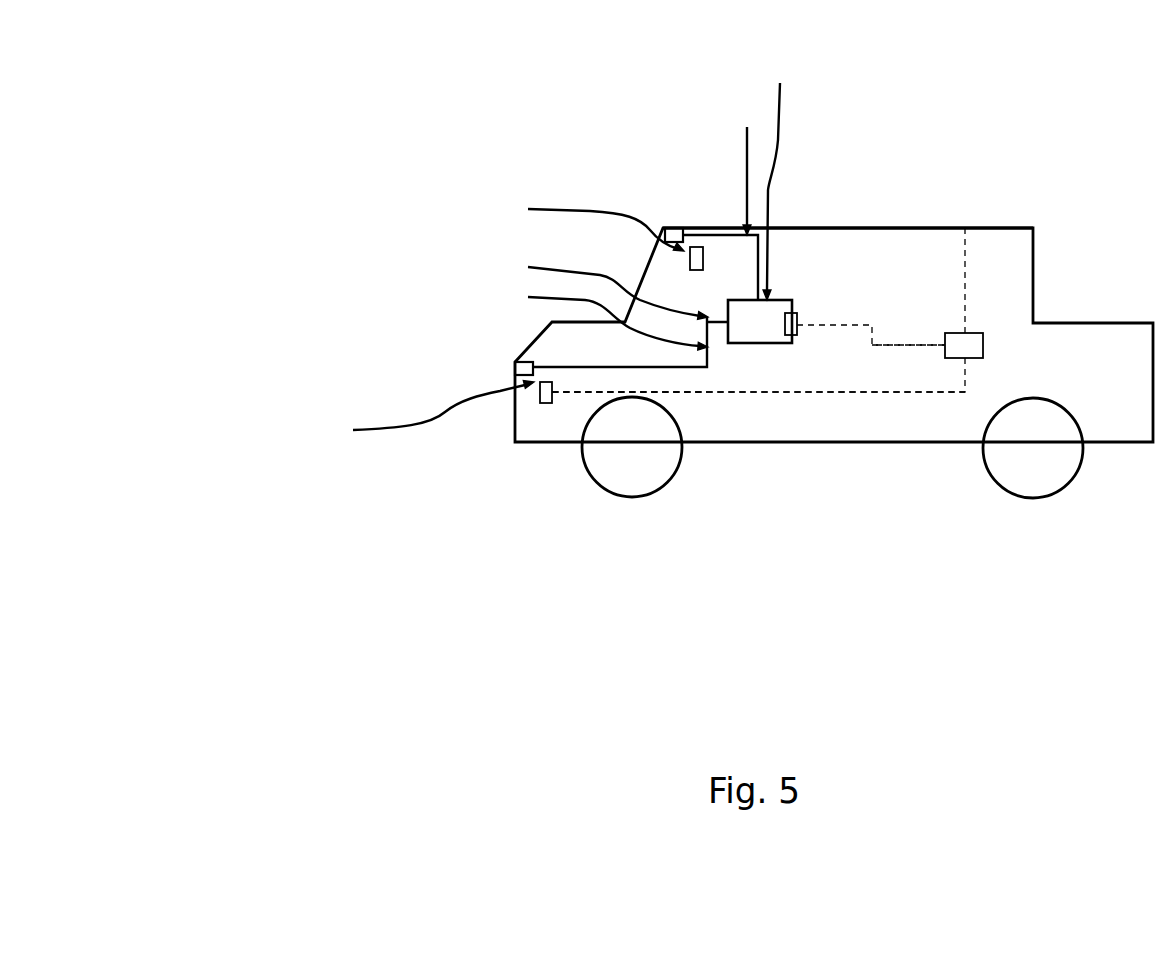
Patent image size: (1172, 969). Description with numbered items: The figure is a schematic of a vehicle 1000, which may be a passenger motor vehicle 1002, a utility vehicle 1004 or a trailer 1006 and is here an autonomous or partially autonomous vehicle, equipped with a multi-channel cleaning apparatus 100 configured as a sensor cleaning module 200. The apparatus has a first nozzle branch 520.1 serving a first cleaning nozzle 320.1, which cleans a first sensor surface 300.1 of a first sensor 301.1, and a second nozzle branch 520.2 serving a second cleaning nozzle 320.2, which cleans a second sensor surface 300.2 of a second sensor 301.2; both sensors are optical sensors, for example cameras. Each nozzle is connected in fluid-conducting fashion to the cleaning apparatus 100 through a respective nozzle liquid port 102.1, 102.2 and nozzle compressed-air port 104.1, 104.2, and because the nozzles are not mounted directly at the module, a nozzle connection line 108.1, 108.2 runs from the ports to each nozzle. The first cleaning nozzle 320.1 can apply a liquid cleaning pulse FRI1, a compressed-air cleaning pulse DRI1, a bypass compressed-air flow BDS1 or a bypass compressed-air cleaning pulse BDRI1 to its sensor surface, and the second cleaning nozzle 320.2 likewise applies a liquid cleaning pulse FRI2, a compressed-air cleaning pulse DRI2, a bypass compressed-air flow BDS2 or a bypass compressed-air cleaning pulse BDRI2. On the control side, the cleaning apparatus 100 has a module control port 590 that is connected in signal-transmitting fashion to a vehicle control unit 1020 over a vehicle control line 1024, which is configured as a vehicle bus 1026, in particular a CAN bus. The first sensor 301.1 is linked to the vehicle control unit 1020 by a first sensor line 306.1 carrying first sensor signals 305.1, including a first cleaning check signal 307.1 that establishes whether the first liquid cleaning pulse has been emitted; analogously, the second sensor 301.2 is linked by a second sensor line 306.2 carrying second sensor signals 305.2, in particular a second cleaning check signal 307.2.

The vehicle 1000 is at (834, 266).
The passenger motor vehicle 1002 is at (834, 266).
The utility vehicle 1004 is at (834, 266).
The trailer 1006 is at (1150, 78).
The multi-channel cleaning apparatus 100 is at (798, 232).
The sensor cleaning module 200 is at (777, 302).
The module control port 590 is at (798, 312).
The first nozzle branch 520.1 is at (758, 327).
The second nozzle branch 520.2 is at (762, 318).
The vehicle control unit 1020 is at (967, 333).
The vehicle control line 1024 is at (928, 296).
The vehicle bus 1026 is at (910, 345).
The first cleaning nozzle 320.1 is at (664, 241).
The first sensor surface 300.1 is at (683, 263).
The first sensor 301.1 is at (702, 233).
The first liquid cleaning pulse FRI1 is at (475, 226).
The first compressed-air cleaning pulse DRI1 is at (475, 226).
The first bypass compressed-air flow BDS1 is at (475, 226).
The first bypass compressed-air cleaning pulse BDRI1 is at (475, 226).
The first nozzle liquid port 102.1 is at (781, 178).
The first nozzle compressed-air port 104.1 is at (781, 178).
The first nozzle connection line 108.1 is at (748, 168).
The second nozzle liquid port 102.2 is at (564, 312).
The second nozzle compressed-air port 104.2 is at (564, 312).
The second nozzle connection line 108.2 is at (585, 318).
The second cleaning nozzle 320.2 is at (513, 379).
The second sensor surface 300.2 is at (529, 400).
The second sensor 301.2 is at (545, 404).
The second liquid cleaning pulse FRI2 is at (341, 419).
The second compressed-air cleaning pulse DRI2 is at (341, 419).
The second bypass compressed-air flow BDS2 is at (341, 419).
The second bypass compressed-air cleaning pulse BDRI2 is at (341, 419).
The first sensor signals 305.1 is at (852, 175).
The first sensor line 306.1 is at (852, 175).
The first cleaning check signal 307.1 is at (930, 228).
The second sensor signals 305.2 is at (758, 461).
The second sensor line 306.2 is at (758, 461).
The second cleaning check signal 307.2 is at (703, 392).